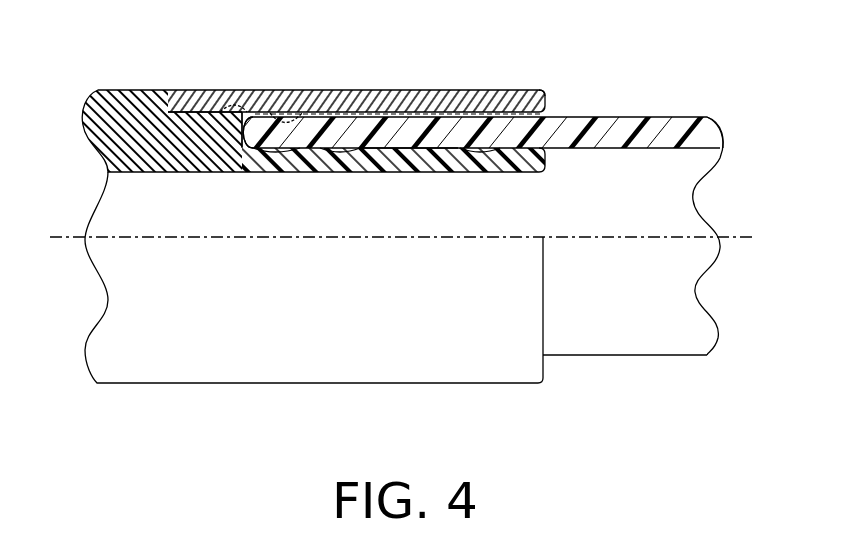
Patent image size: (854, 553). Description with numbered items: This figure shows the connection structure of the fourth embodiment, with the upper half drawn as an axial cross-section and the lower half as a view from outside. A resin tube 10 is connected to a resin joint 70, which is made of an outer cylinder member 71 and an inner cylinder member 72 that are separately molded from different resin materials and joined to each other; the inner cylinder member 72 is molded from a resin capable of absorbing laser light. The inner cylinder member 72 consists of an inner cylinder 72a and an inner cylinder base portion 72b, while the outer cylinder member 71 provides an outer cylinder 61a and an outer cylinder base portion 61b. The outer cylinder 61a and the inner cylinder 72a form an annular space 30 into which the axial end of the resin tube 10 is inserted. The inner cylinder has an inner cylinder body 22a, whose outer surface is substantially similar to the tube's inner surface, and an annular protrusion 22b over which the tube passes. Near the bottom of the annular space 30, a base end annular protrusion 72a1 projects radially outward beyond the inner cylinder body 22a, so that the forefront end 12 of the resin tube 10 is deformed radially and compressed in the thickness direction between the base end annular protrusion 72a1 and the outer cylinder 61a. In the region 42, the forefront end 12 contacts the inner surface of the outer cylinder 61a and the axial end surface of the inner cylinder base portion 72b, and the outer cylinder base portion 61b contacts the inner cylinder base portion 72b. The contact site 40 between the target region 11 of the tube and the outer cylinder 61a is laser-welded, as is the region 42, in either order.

The resin tube 10 is at (474, 122).
The target region 11 is at (340, 120).
The forefront end 12 is at (253, 128).
The inner cylinder body 22a is at (416, 152).
The annular protrusion 22b is at (340, 150).
The annular space 30 is at (284, 115).
The contact site 40 is at (336, 113).
The region 42 is at (228, 92).
The outer cylinder 61a is at (515, 100).
The outer cylinder base portion 61b is at (183, 98).
The resin joint 70 is at (110, 90).
The outer cylinder member 71 is at (548, 88).
The inner cylinder member 72 is at (138, 93).
The inner cylinder 72a is at (527, 160).
The base end annular protrusion 72a1 is at (250, 155).
The inner cylinder base portion 72b is at (170, 153).